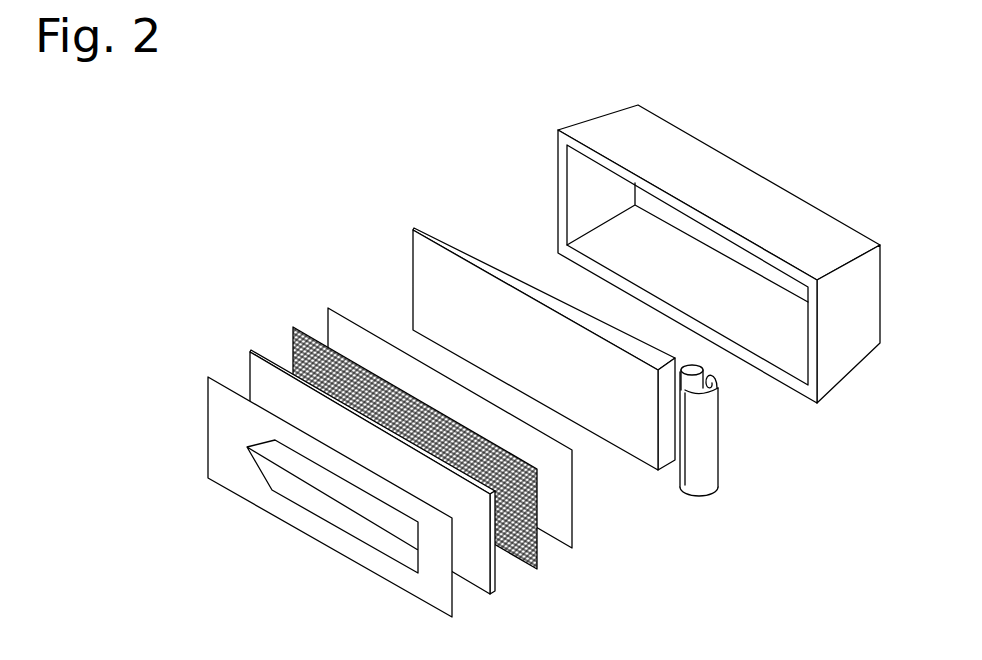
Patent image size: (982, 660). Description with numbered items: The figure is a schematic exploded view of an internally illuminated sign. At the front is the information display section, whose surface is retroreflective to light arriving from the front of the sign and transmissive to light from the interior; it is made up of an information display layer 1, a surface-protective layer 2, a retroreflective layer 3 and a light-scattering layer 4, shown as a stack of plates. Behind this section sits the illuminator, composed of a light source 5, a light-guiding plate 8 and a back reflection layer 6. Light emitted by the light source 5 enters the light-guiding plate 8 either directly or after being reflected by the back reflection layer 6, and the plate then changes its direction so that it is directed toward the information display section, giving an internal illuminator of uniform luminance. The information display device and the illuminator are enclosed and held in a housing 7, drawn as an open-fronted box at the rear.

The information display layer 1 is at (443, 603).
The surface-protective layer 2 is at (483, 582).
The retroreflective layer 3 is at (538, 555).
The light-scattering layer 4 is at (562, 523).
The light source 5 is at (703, 370).
The back reflection layer 6 is at (702, 477).
The housing 7 is at (845, 345).
The light-guiding plate 8 is at (608, 415).